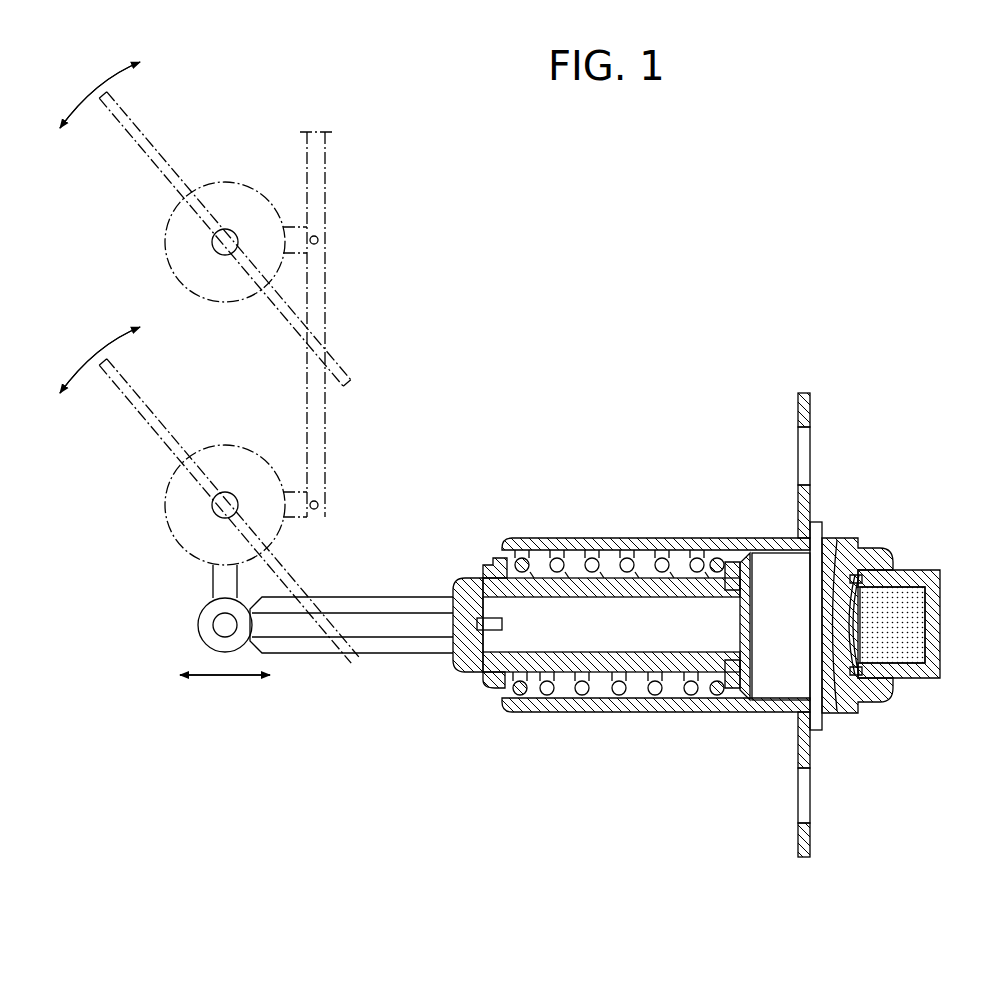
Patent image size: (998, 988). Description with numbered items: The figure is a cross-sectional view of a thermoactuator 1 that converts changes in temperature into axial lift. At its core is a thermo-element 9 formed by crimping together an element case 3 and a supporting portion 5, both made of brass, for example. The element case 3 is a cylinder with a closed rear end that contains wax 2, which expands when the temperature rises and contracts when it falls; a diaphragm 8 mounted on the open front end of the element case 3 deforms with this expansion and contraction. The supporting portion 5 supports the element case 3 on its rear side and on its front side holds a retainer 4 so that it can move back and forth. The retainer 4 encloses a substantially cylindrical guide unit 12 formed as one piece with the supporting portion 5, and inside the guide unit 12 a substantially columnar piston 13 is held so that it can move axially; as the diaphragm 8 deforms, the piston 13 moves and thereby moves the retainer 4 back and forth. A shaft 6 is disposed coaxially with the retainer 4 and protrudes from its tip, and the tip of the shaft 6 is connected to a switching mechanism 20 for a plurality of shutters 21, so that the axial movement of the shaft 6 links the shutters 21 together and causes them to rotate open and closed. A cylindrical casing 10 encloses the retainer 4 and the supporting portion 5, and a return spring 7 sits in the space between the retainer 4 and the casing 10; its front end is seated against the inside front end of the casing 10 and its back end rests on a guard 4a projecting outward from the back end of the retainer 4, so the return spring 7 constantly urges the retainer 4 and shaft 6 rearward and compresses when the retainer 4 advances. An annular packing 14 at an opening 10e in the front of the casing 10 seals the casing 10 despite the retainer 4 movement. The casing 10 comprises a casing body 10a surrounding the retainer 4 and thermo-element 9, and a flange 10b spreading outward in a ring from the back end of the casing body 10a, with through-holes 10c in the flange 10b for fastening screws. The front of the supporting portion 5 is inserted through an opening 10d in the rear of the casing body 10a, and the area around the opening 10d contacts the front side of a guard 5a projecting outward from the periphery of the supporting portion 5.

The thermoactuator 1 is at (541, 383).
The wax 2 is at (912, 653).
The element case 3 is at (940, 572).
The retainer 4 is at (567, 683).
The guard 4a is at (736, 692).
The supporting portion 5 is at (778, 690).
The guard 5a is at (822, 725).
The shaft 6 is at (374, 656).
The return spring 7 is at (637, 558).
The diaphragm 8 is at (866, 642).
The thermo-element 9 is at (896, 540).
The casing 10 is at (693, 616).
The casing body 10a is at (594, 537).
The flange 10b is at (797, 400).
The through-holes 10c is at (797, 455).
The opening 10d is at (830, 537).
The opening 10e is at (497, 556).
The guide unit 12 is at (476, 655).
The piston 13 is at (478, 590).
The annular packing 14 is at (488, 690).
The switching mechanism 20 is at (348, 213).
The shutters 21 is at (152, 132).